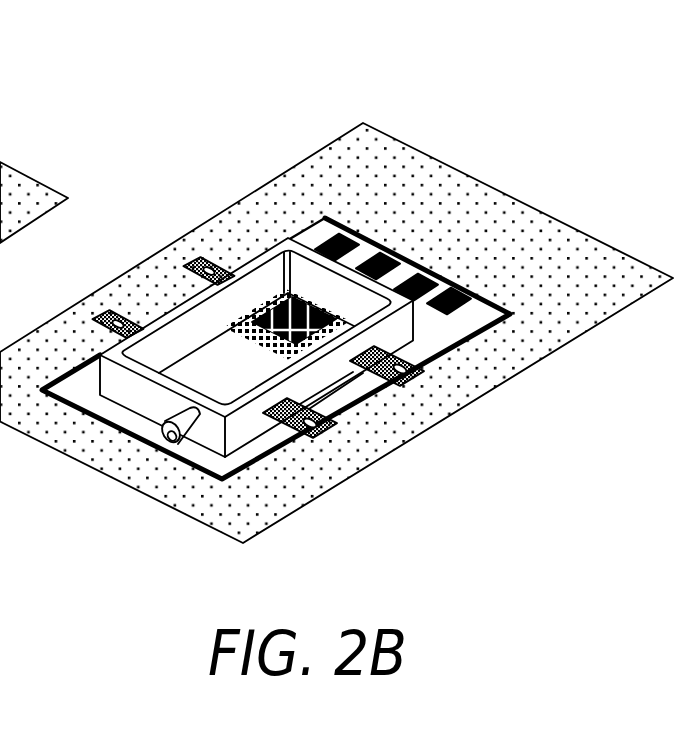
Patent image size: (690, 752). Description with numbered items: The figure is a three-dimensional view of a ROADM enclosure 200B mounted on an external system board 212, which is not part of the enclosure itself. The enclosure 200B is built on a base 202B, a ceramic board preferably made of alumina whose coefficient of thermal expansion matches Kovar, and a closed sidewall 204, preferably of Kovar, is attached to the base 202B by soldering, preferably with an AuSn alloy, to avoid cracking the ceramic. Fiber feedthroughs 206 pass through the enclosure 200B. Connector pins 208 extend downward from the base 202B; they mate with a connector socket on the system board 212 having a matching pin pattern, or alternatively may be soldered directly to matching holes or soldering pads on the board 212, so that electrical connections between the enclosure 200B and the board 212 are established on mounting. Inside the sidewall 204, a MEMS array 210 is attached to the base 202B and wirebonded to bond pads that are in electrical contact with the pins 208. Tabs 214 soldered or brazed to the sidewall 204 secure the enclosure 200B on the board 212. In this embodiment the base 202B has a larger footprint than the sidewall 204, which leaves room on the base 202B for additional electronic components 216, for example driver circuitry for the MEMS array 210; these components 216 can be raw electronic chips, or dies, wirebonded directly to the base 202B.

The ROADM enclosure 200B is at (288, 210).
The base 202B is at (440, 333).
The closed sidewall 204 is at (323, 372).
The fiber feedthroughs 206 is at (165, 443).
The connector pins 208 is at (238, 330).
The MEMS array 210 is at (280, 310).
The external system board 212 is at (584, 294).
The tabs 214 is at (187, 273).
The additional electronic components 216 is at (345, 237).